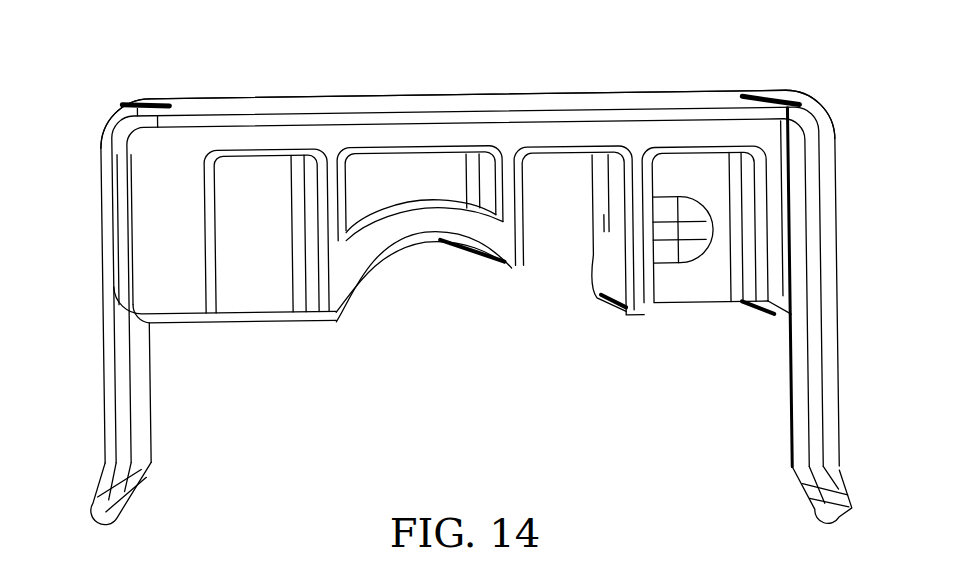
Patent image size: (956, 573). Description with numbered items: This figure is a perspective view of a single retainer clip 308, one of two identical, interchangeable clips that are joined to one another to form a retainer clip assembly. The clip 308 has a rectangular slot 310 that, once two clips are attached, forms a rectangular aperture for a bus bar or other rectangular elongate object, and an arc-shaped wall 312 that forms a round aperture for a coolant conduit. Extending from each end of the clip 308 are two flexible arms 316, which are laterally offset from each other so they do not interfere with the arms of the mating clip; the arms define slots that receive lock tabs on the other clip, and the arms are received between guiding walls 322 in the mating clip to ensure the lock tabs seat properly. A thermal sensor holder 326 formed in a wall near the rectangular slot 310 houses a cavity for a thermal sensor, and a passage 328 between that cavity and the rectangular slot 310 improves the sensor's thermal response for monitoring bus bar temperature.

The retainer clip 308 is at (296, 94).
The rectangular slot 310 is at (553, 214).
The arc-shaped wall 312 is at (401, 247).
The flexible arms 316 is at (103, 428).
The guiding walls 322 is at (102, 147).
The thermal sensor holder 326 is at (664, 203).
The passage 328 is at (605, 230).